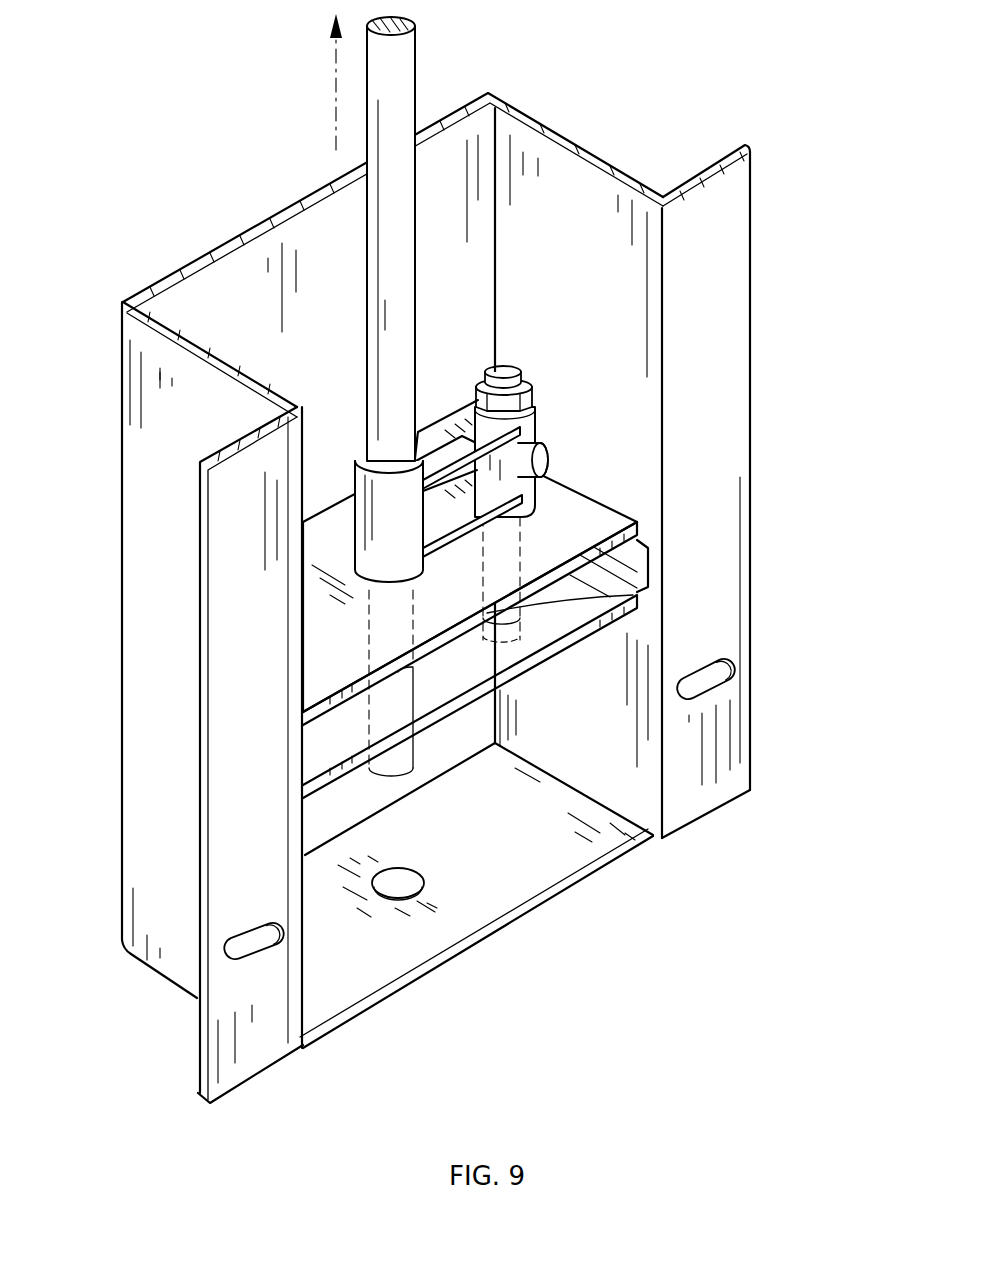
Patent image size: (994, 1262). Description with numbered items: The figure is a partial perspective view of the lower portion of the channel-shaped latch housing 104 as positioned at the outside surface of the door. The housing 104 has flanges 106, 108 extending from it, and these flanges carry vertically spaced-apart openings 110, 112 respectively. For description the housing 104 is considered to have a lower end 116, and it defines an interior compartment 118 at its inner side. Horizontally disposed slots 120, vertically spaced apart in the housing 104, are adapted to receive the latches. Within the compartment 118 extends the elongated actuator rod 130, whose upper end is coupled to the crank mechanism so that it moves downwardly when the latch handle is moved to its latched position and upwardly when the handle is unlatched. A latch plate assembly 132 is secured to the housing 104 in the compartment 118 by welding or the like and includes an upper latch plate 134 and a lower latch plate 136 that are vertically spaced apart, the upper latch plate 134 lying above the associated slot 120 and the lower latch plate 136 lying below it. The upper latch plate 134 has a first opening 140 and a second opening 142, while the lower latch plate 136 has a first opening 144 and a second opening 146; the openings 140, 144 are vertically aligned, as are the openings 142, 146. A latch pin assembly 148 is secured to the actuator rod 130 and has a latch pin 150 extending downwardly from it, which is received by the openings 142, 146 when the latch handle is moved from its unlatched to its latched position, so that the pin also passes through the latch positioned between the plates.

The channel-shaped latch housing 104 is at (450, 573).
The flange 106 is at (230, 688).
The flange 108 is at (715, 450).
The openings 110 is at (252, 942).
The openings 112 is at (703, 680).
The lower end 116 is at (480, 952).
The interior compartment 118 is at (322, 300).
The slots 120 is at (633, 558).
The actuator rod 130 is at (398, 72).
The latch plate assembly 132 is at (574, 485).
The upper latch plate 134 is at (328, 655).
The lower latch plate 136 is at (326, 752).
The first opening 140 is at (413, 582).
The second opening 142 is at (600, 518).
The first opening 144 is at (413, 667).
The second opening 146 is at (640, 596).
The latch pin assembly 148 is at (440, 405).
The latch pin 150 is at (553, 650).